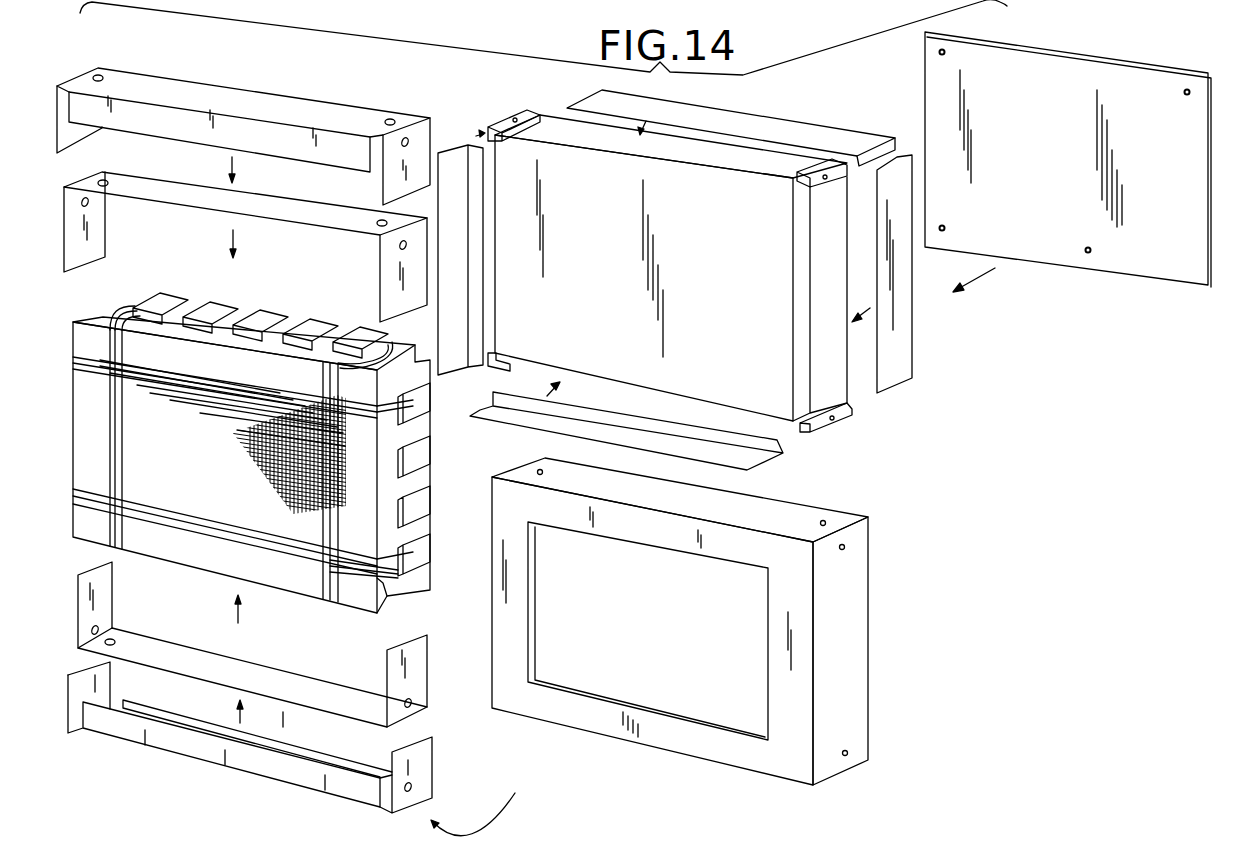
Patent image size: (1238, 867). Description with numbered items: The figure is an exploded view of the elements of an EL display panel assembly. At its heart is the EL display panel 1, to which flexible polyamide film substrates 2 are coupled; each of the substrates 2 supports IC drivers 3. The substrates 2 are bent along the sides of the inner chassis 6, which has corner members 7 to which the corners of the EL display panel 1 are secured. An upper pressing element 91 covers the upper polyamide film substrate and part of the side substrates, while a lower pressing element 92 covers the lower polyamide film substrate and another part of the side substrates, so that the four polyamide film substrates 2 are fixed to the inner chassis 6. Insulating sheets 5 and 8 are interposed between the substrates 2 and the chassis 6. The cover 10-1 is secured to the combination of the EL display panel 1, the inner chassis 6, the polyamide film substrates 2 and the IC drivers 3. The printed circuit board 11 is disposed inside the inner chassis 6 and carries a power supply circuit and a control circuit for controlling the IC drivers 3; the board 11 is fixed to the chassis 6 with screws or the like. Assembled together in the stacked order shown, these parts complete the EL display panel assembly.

The EL display panel 1 is at (80, 429).
The polyamide film substrates 2 is at (128, 300).
The IC drivers 3 is at (163, 298).
The insulating sheets 5 is at (458, 142).
The inner chassis 6 is at (553, 155).
The corner members 7 is at (827, 423).
The insulating sheets 8 is at (273, 223).
The upper pressing element 91 is at (433, 125).
The lower pressing element 92 is at (267, 785).
The cover 10-1 is at (857, 658).
The printed circuit board 11 is at (1052, 253).